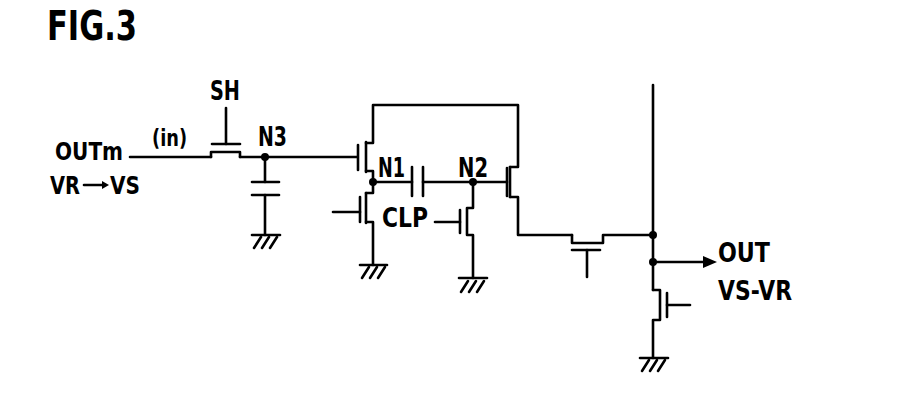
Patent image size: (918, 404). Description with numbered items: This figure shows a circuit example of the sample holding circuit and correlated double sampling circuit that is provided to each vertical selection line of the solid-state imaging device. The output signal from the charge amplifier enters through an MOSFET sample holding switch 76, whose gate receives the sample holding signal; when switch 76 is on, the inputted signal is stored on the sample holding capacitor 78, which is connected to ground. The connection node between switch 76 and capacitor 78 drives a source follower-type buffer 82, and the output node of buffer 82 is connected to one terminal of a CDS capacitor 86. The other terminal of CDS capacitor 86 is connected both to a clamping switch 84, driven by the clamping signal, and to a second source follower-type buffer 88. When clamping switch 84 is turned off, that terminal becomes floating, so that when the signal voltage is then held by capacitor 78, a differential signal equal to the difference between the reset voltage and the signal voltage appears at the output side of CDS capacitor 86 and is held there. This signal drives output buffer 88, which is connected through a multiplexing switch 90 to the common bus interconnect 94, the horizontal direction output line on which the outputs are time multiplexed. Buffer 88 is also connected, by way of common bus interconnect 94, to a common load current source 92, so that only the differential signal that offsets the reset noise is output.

The sample holding switch 76 is at (222, 160).
The sample holding capacitor 78 is at (248, 192).
The source follower-type buffer 82 is at (334, 189).
The clamping switch 84 is at (462, 243).
The CDS capacitor 86 is at (413, 166).
The source follower-type buffer 88 is at (520, 180).
The multiplexing switch 90 is at (585, 228).
The common load current source 92 is at (650, 307).
The common bus interconnect 94 is at (653, 132).